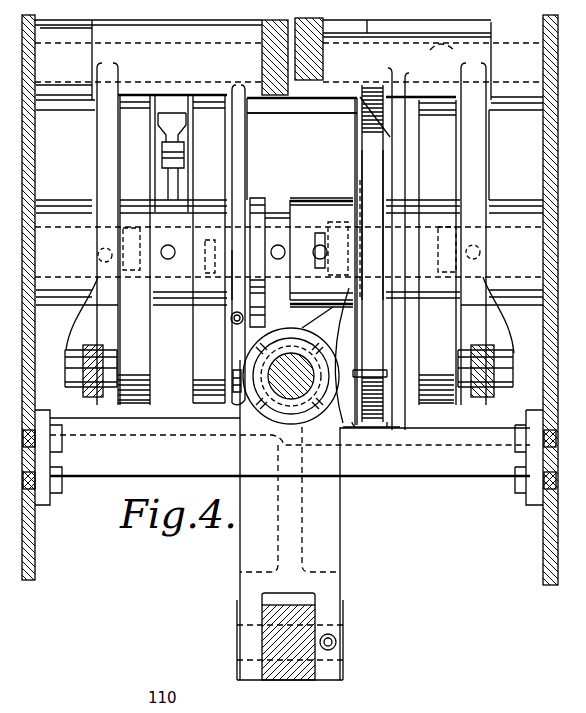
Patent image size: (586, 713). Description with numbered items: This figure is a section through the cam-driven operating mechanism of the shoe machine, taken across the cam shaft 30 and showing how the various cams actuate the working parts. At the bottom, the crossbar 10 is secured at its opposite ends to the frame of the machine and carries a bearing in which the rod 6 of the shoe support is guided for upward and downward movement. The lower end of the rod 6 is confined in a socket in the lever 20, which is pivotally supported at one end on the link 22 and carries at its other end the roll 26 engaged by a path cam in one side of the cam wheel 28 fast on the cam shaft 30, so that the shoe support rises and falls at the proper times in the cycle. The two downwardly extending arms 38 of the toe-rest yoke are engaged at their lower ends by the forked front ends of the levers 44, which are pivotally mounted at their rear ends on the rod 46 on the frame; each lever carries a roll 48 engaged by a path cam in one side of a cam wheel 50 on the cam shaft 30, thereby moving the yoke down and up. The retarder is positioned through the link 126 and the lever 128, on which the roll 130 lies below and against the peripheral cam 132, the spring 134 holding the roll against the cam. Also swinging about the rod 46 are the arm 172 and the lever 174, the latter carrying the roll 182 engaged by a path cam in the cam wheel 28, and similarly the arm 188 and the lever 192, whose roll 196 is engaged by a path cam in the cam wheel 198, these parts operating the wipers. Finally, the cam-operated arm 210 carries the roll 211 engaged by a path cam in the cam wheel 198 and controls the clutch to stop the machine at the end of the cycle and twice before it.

The rod 6 is at (295, 388).
The crossbar 10 is at (463, 462).
The lever 20 is at (340, 515).
The link 22 is at (292, 673).
The roll 26 is at (363, 233).
The cam wheel 28 is at (366, 156).
The cam shaft 30 is at (510, 227).
The arms 38 is at (95, 393).
The levers 44 is at (83, 323).
The rod 46 is at (442, 56).
The roll 48 is at (133, 217).
The cam wheel 50 is at (135, 375).
The link 126 is at (242, 390).
The lever 128 is at (240, 338).
The roll 130 is at (263, 272).
The peripheral cam 132 is at (260, 197).
The spring 134 is at (231, 318).
The arm 172 is at (313, 62).
The lever 174 is at (396, 155).
The roll 182 is at (395, 285).
The arm 188 is at (272, 62).
The lever 192 is at (240, 130).
The roll 196 is at (232, 300).
The cam wheel 198 is at (212, 385).
The cam-operated arm 210 is at (180, 180).
The roll 211 is at (205, 224).